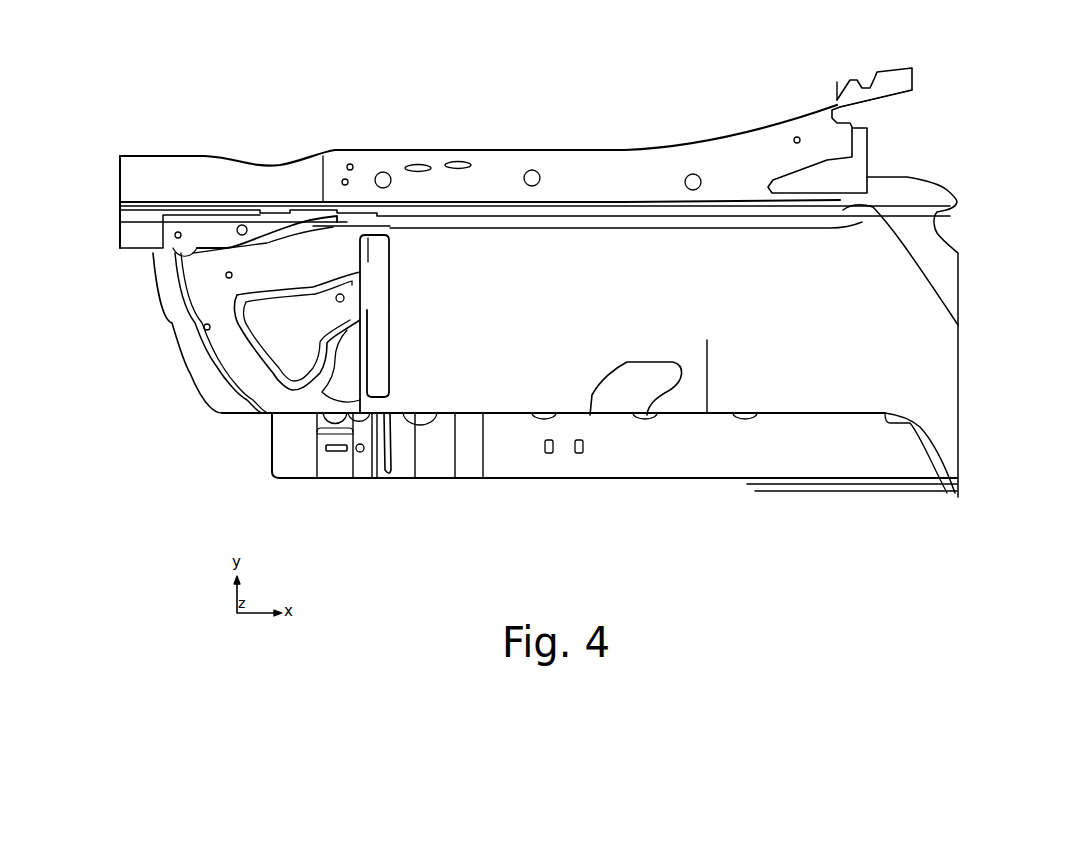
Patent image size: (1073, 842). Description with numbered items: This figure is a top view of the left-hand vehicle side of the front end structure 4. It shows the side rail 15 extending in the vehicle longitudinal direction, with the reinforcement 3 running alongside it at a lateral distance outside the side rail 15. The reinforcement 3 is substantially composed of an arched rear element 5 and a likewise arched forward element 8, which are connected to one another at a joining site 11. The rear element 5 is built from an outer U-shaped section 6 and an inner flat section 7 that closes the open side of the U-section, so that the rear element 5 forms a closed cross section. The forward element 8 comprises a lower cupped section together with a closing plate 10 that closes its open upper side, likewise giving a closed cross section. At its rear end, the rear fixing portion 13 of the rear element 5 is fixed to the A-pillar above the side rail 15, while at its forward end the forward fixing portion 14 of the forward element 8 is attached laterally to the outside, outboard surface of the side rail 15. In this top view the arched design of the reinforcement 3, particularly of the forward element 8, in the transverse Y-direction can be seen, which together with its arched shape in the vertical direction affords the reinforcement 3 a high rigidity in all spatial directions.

The reinforcement 3 is at (238, 472).
The front end structure 4 is at (202, 110).
The rear element 5 is at (758, 510).
The outer U-shaped section 6 is at (636, 460).
The inner flat section 7 is at (707, 340).
The forward element 8 is at (146, 330).
The closing plate 10 is at (230, 338).
The joining site 11 is at (360, 484).
The rear fixing portion 13 is at (940, 458).
The forward fixing portion 14 is at (398, 230).
The side rail 15 is at (487, 164).